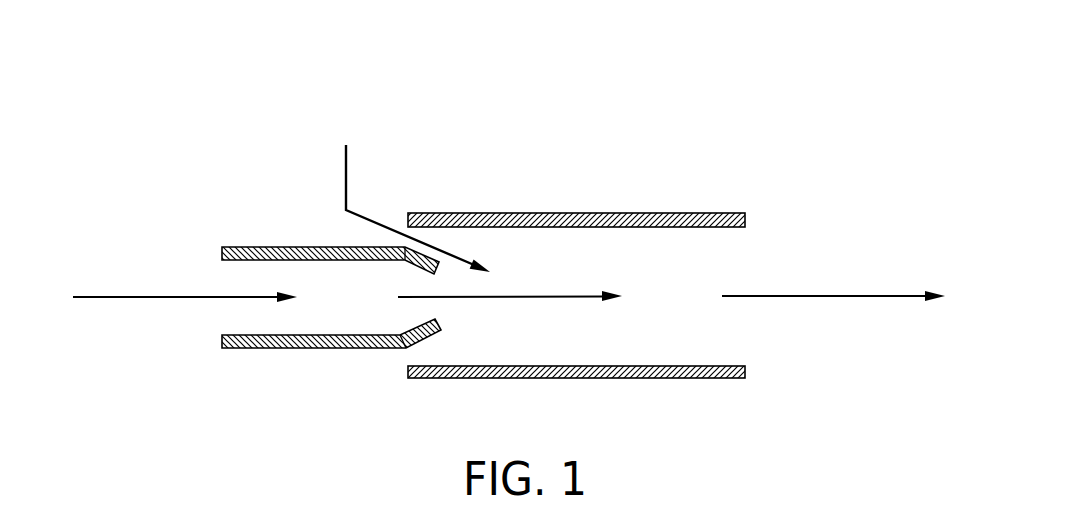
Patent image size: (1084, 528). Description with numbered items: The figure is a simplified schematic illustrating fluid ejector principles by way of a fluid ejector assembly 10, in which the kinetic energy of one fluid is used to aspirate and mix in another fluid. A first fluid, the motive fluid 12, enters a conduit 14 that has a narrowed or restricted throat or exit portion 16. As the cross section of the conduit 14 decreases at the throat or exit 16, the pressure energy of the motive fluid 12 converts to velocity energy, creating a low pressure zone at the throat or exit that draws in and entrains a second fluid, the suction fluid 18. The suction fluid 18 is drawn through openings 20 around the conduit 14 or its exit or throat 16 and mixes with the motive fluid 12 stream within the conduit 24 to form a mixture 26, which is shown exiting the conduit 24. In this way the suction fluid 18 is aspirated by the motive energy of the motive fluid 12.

The fluid ejector assembly 10 is at (699, 114).
The motive fluid 12 is at (177, 297).
The conduit 14 is at (260, 247).
The throat or exit portion 16 is at (438, 323).
The suction fluid 18 is at (346, 175).
The opening 20 is at (396, 357).
The conduit 24 is at (578, 213).
The mixture 26 is at (817, 296).